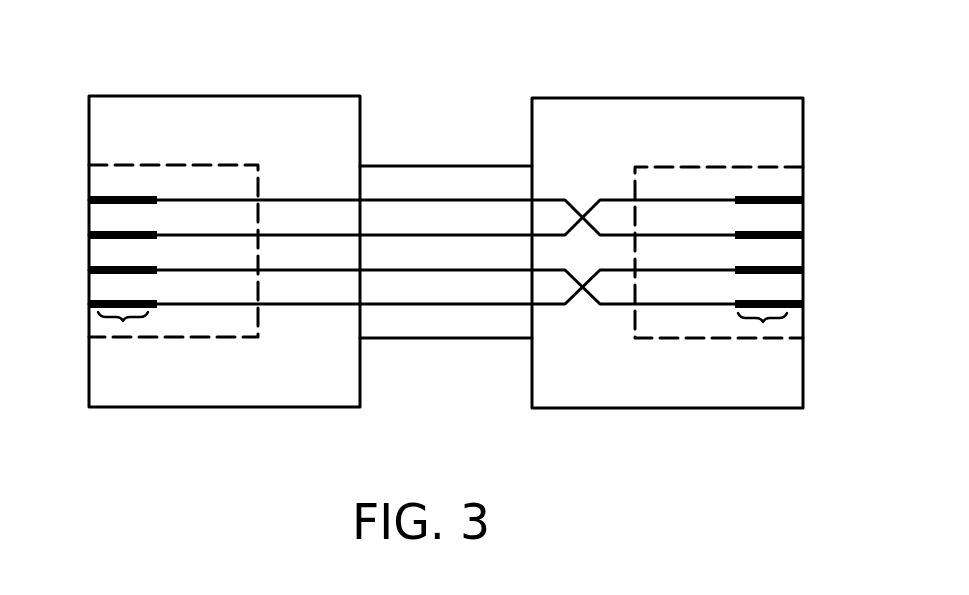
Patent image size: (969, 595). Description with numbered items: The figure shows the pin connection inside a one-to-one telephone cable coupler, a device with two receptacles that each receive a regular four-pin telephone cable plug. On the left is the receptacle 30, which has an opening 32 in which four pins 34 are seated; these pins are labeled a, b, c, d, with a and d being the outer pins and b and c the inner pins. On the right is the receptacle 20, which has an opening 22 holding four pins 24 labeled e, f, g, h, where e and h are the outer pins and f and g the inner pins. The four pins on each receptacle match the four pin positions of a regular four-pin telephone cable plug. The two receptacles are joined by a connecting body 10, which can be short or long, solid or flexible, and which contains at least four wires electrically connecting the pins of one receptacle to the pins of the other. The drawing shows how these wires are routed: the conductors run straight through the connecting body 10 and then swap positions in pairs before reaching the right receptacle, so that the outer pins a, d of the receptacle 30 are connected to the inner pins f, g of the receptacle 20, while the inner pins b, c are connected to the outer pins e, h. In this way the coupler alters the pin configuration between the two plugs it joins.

The connecting body 10 is at (468, 324).
The receptacle 20 is at (772, 108).
The opening 22 is at (793, 182).
The pins 24 is at (763, 327).
The receptacle 30 is at (223, 110).
The opening 32 is at (118, 178).
The pins 34 is at (123, 326).
The outer pin a is at (87, 198).
The inner pin b is at (87, 233).
The inner pin c is at (87, 268).
The outer pin d is at (87, 302).
The outer pin e is at (806, 203).
The inner pin f is at (806, 238).
The inner pin g is at (806, 273).
The outer pin h is at (806, 307).